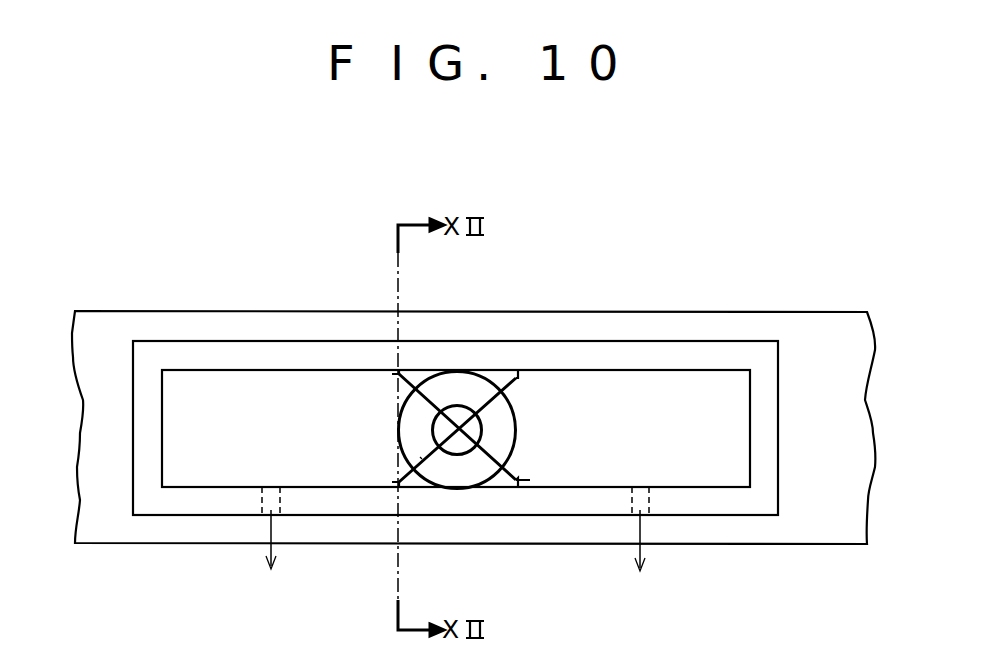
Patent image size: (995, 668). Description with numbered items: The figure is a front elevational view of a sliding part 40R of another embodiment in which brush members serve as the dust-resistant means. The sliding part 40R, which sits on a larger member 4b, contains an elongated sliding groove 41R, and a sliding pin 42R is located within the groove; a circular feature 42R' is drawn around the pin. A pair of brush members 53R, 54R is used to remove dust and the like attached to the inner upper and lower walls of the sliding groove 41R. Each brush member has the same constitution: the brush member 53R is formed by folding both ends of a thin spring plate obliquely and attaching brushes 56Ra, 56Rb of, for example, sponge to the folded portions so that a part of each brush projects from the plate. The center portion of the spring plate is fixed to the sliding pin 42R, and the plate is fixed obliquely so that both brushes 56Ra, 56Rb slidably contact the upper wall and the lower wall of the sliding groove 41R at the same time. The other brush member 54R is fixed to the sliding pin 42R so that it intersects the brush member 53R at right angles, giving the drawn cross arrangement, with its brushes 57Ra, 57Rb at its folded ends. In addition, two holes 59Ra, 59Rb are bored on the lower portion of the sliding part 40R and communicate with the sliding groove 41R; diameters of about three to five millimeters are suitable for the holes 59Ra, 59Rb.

The substrate 4b is at (702, 311).
The sliding part 40R is at (781, 408).
The sliding groove 41R is at (222, 369).
The sliding pin 42R is at (452, 360).
The circular electrode 42R' is at (504, 430).
The brush member 53R is at (420, 457).
The brush member 54R is at (415, 405).
The brush 56Ra is at (380, 486).
The brush 56Rb is at (530, 372).
The corner tab 57Ra is at (530, 480).
The corner tab 57Rb is at (378, 370).
The hole 59Ra is at (265, 522).
The hole 59Rb is at (635, 520).